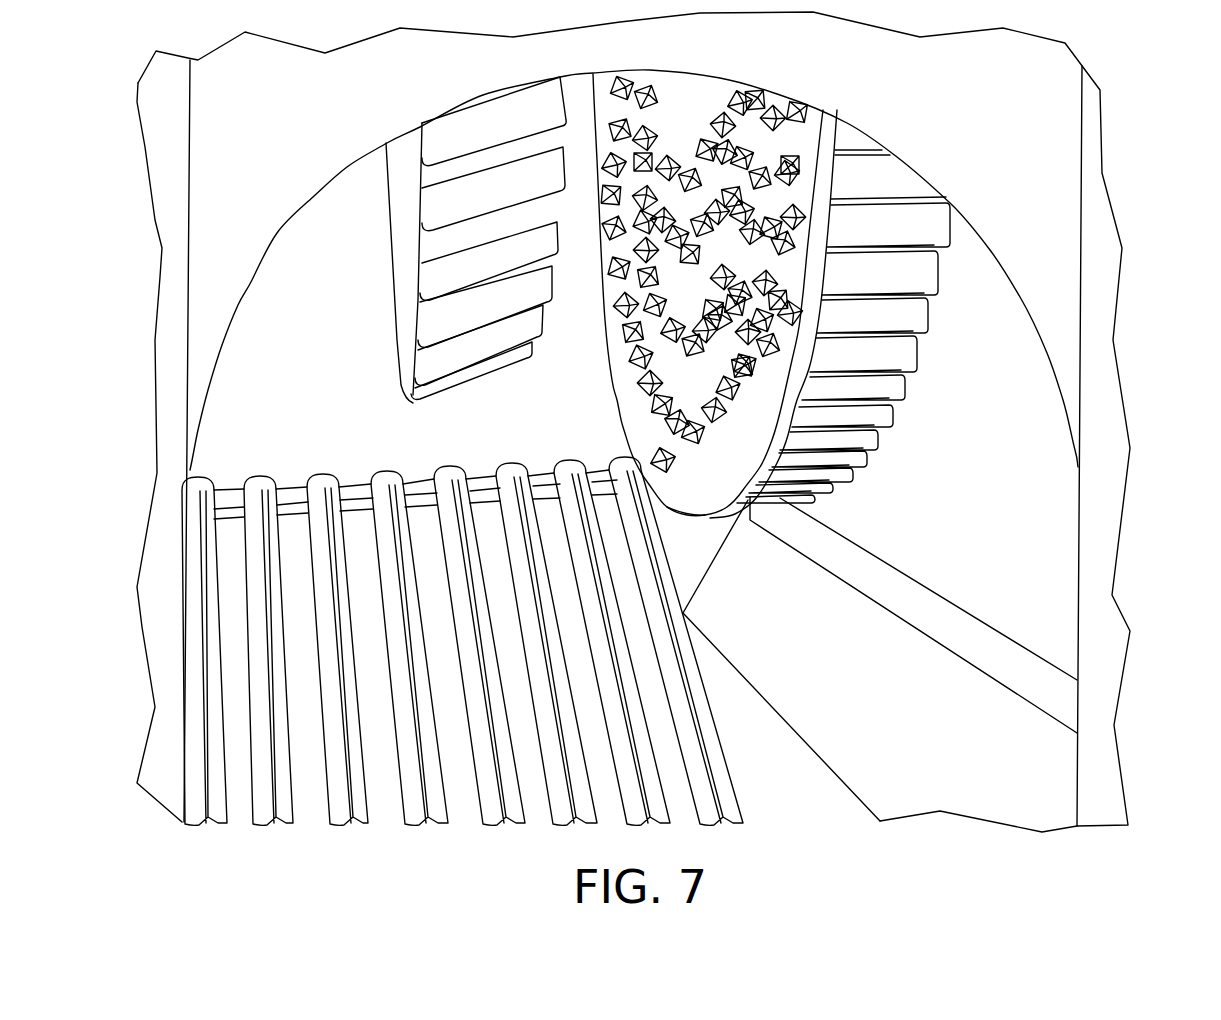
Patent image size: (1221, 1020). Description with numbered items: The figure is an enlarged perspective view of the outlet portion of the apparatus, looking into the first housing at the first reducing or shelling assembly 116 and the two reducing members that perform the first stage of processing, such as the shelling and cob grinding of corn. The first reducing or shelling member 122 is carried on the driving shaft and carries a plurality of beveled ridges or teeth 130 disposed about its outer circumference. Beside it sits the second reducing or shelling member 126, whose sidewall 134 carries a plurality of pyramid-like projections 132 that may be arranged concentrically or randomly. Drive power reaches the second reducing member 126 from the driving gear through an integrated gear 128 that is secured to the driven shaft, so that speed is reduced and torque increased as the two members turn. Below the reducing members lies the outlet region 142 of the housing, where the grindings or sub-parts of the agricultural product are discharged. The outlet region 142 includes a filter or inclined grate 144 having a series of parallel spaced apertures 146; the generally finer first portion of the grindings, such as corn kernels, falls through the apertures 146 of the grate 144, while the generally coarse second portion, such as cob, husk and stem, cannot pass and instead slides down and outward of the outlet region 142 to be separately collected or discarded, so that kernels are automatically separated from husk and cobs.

The first reducing or shelling assembly 116 is at (365, 380).
The first reducing or shelling member 122 is at (430, 303).
The second reducing or shelling member 126 is at (612, 378).
The integrated gear 128 is at (898, 360).
The beveled ridges or teeth 130 is at (437, 202).
The pyramid-like projections 132 is at (773, 110).
The sidewall 134 is at (716, 475).
The outlet region 142 is at (1146, 536).
The filter or inclined grate 144 is at (623, 648).
The parallel spaced apertures 146 is at (547, 510).